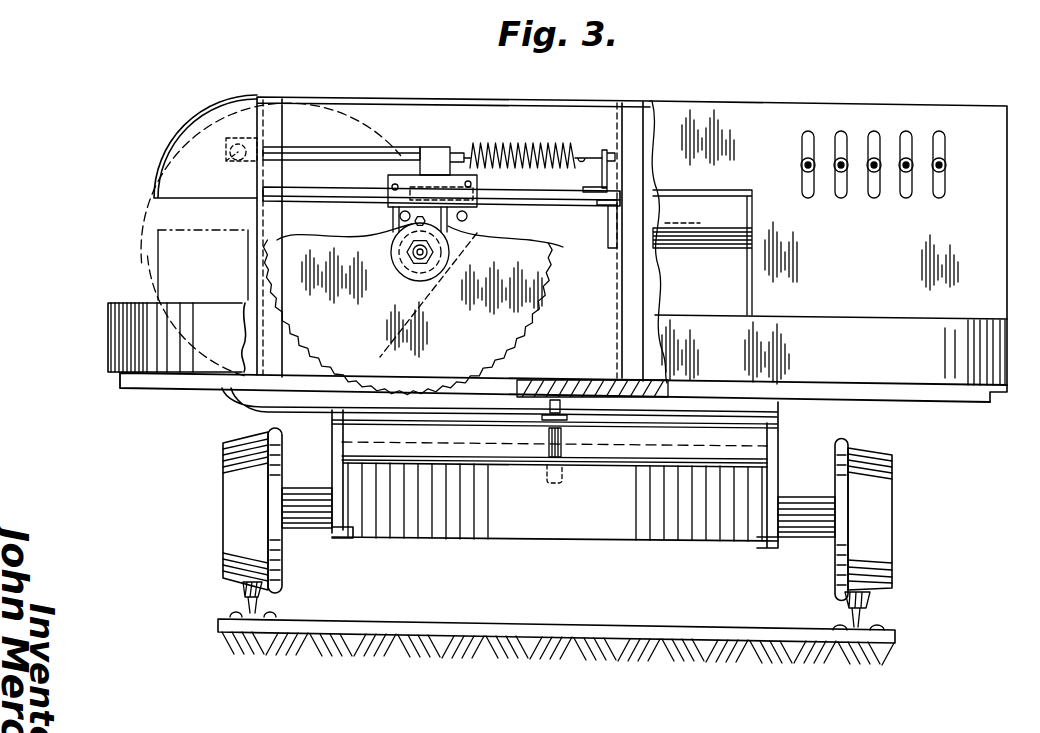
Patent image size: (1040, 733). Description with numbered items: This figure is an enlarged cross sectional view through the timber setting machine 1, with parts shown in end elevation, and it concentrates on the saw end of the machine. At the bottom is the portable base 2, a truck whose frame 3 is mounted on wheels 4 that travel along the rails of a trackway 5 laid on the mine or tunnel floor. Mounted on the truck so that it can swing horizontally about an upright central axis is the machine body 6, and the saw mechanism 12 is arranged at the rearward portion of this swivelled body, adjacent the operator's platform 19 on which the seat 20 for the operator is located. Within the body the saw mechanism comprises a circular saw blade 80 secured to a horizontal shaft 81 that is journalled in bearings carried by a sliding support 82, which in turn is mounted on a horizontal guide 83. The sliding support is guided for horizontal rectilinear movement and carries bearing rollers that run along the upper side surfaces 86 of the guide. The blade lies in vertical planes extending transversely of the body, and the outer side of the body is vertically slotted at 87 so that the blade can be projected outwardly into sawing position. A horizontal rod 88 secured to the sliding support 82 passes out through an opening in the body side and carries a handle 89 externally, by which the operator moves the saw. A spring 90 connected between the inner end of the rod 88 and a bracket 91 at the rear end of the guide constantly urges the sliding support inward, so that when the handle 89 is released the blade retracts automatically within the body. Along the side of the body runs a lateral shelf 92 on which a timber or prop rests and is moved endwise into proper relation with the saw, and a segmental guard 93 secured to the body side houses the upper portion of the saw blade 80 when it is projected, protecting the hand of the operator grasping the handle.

The timber setting machine 1 is at (971, 101).
The portable base 2 is at (773, 432).
The frame 3 is at (382, 538).
The wheels 4 is at (233, 512).
The trackway 5 is at (860, 612).
The machine body 6 is at (745, 110).
The saw mechanism 12 is at (437, 148).
The operator's platform 19 is at (773, 313).
The seat 20 is at (737, 193).
The circular saw blade 80 is at (527, 327).
The horizontal shaft 81 is at (418, 256).
The sliding support 82 is at (440, 182).
The horizontal guide 83 is at (588, 198).
The upper side surfaces 86 is at (533, 195).
The vertical slot 87 is at (263, 395).
The horizontal rod 88 is at (435, 215).
The handle 89 is at (233, 160).
The spring 90 is at (534, 150).
The bracket 91 is at (608, 175).
The shelf 92 is at (115, 300).
The segmental guard 93 is at (186, 124).